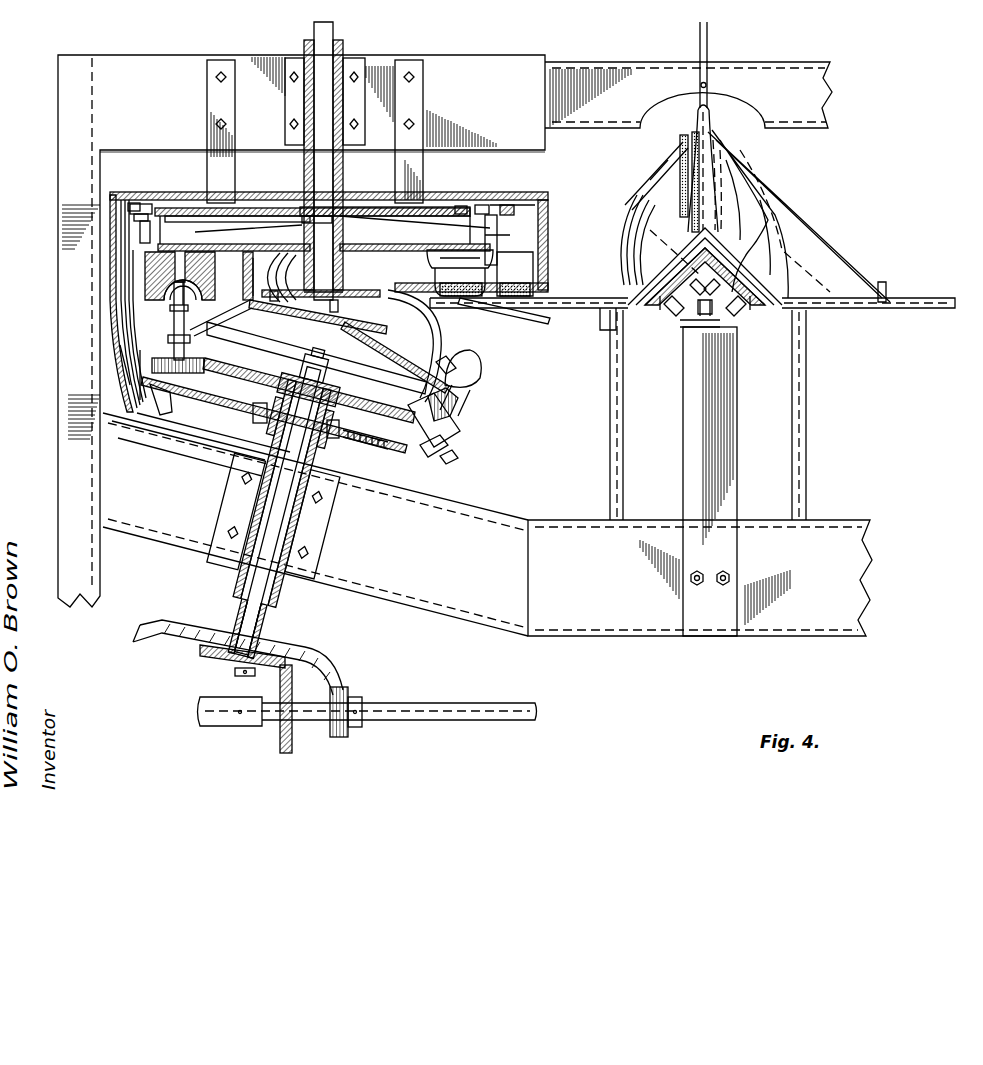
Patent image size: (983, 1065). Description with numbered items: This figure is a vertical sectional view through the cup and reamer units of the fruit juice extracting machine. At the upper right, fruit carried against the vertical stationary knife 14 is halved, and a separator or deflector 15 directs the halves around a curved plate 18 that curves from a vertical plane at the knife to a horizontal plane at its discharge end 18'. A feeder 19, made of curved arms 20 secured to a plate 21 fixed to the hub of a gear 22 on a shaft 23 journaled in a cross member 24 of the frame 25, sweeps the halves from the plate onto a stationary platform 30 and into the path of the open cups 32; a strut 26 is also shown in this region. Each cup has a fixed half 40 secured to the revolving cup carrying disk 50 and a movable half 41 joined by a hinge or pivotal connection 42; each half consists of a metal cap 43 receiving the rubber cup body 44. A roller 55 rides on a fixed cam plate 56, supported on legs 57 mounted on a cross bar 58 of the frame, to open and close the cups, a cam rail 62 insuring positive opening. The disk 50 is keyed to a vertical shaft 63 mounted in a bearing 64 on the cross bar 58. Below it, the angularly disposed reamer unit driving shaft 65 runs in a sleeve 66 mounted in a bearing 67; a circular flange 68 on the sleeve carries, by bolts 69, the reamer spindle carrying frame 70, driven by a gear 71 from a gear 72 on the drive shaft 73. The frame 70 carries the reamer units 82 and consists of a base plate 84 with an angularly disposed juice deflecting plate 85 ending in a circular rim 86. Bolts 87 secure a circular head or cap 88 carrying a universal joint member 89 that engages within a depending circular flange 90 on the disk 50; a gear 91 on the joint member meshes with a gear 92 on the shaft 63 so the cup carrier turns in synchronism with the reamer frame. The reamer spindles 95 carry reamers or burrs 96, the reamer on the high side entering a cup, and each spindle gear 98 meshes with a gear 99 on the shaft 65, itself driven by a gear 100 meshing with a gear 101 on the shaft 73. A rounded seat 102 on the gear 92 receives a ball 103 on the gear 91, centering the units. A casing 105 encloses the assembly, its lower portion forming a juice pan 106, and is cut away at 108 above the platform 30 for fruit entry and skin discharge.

The vertical stationary knife 14 is at (708, 40).
The separator or deflector 15 is at (708, 105).
The curved plate 18 is at (746, 214).
The discharge end 18' is at (590, 326).
The feeder 19 is at (606, 218).
The curved arms 20 is at (680, 146).
The plate 21 is at (660, 245).
The gear 22 is at (656, 314).
The shaft 23 is at (712, 310).
The cross member 24 is at (680, 340).
The frame 25 is at (58, 172).
The strut 26 is at (650, 195).
The stationary platform 30 is at (944, 300).
The cups 32 is at (140, 265).
The fixed half of cup 40 is at (212, 282).
The movable half of cup 41 is at (148, 302).
The hinge or pivotal connection 42 is at (130, 242).
The metal cap 43 is at (152, 290).
The cup body 44 is at (150, 320).
The cup carrying disk 50 is at (230, 243).
The roller 55 is at (140, 204).
The cam plate 56 is at (168, 208).
The legs 57 is at (236, 172).
The cross bar 58 is at (185, 92).
The cam rail 62 is at (500, 213).
The vertical shaft 63 is at (314, 34).
The bearing 64 is at (300, 98).
The reamer unit driving shaft 65 is at (298, 380).
The sleeve 66 is at (262, 430).
The bearing 67 is at (300, 520).
The circular flange 68 is at (332, 438).
The bolts 69 is at (318, 470).
The reamer spindle carrying frame 70 is at (212, 411).
The gear 71 is at (318, 660).
The gear 72 is at (352, 694).
The drive shaft 73 is at (422, 702).
The reamer units 82 is at (148, 340).
The base plate 84 is at (370, 442).
The juice deflecting plate 85 is at (455, 440).
The circular rim 86 is at (475, 460).
The bolts 87 is at (446, 360).
The circular head or cap 88 is at (410, 330).
The universal joint member 89 is at (410, 318).
The depending circular flange 90 is at (404, 246).
The gear 91 is at (300, 296).
The gear 92 is at (262, 284).
The reamer spindles 95 is at (196, 357).
The reamer or burr 96 is at (486, 357).
The gear 98 is at (145, 381).
The gear 99 is at (262, 380).
The gear 100 is at (206, 664).
The gear 101 is at (292, 752).
The rounded seat 102 is at (332, 320).
The ball 103 is at (317, 358).
The casing 105 is at (102, 215).
The pan 106 is at (156, 420).
The cut away 108 is at (568, 217).